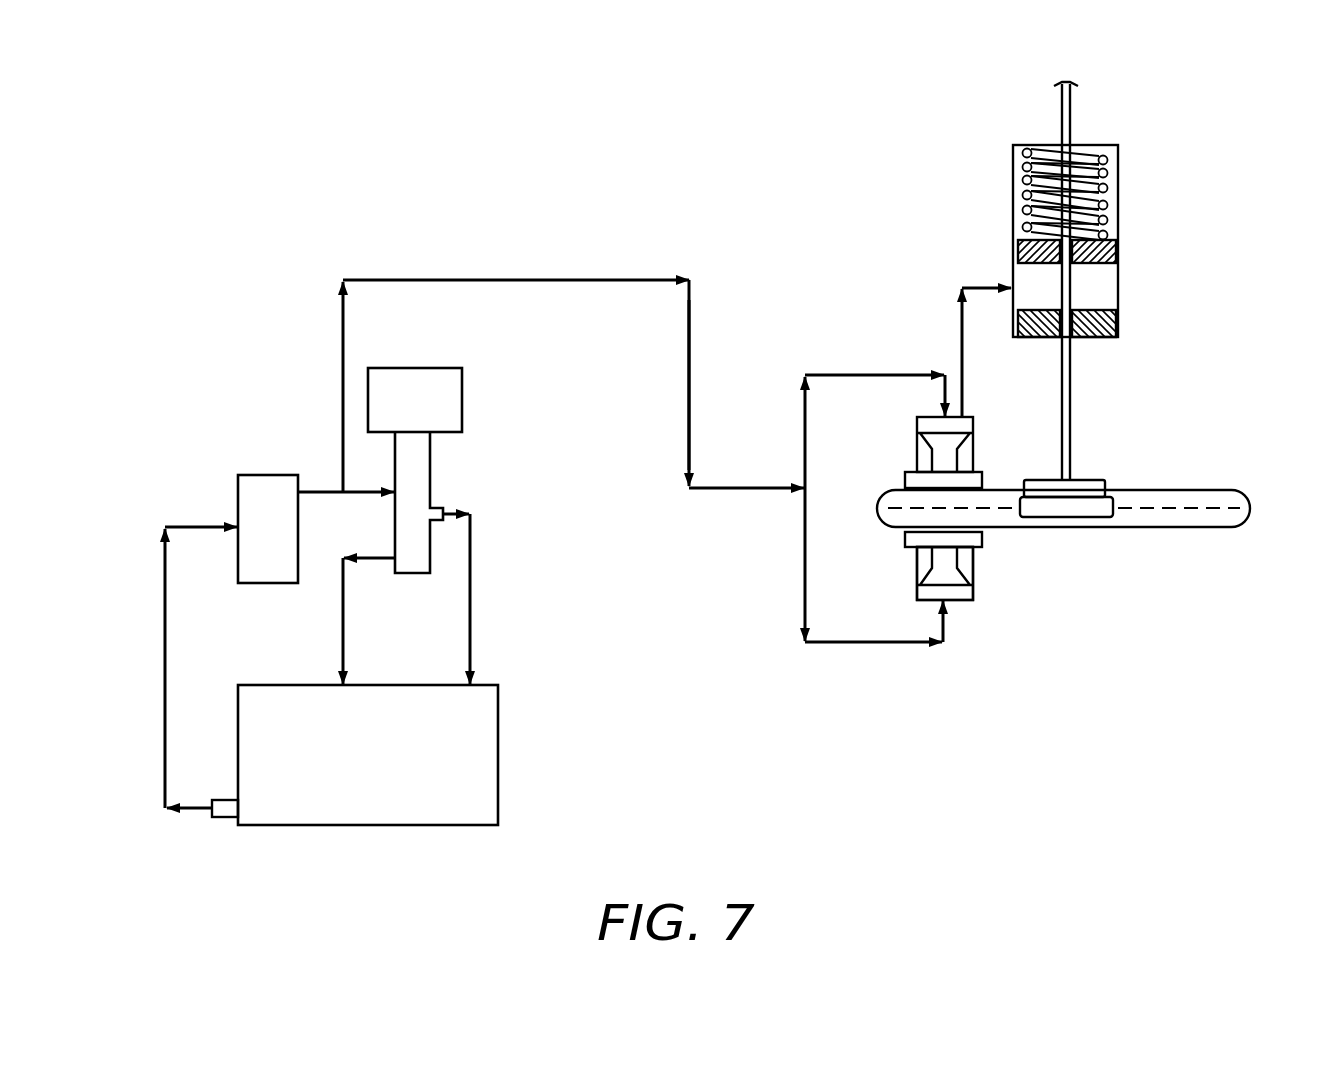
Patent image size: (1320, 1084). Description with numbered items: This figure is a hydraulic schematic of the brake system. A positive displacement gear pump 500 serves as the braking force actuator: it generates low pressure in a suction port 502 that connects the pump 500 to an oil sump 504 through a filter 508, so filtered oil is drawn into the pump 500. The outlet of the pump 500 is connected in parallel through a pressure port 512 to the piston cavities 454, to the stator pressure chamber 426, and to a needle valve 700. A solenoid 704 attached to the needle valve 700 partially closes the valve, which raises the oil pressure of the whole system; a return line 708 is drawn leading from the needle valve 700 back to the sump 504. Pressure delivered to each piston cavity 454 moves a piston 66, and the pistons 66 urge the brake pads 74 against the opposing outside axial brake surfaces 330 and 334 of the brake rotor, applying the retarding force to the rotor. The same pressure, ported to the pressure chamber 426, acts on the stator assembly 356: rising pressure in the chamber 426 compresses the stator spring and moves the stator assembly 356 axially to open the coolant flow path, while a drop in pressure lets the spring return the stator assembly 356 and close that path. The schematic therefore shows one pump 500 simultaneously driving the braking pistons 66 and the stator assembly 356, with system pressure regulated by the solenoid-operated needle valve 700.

The gear pump 500 is at (258, 473).
The suction port 502 is at (167, 652).
The oil sump 504 is at (500, 708).
The filter 508 is at (225, 818).
The pressure port 512 is at (689, 378).
The needle valve 700 is at (444, 473).
The solenoid 704 is at (463, 386).
The return line 708 is at (472, 572).
The pressure chamber 426 is at (1103, 288).
The stator assembly 356 is at (1070, 408).
The brake surface 334 is at (1190, 490).
The brake surface 330 is at (1185, 528).
The piston 66 is at (928, 456).
The brake pad 74 is at (983, 475).
The piston cavity 454 is at (950, 592).